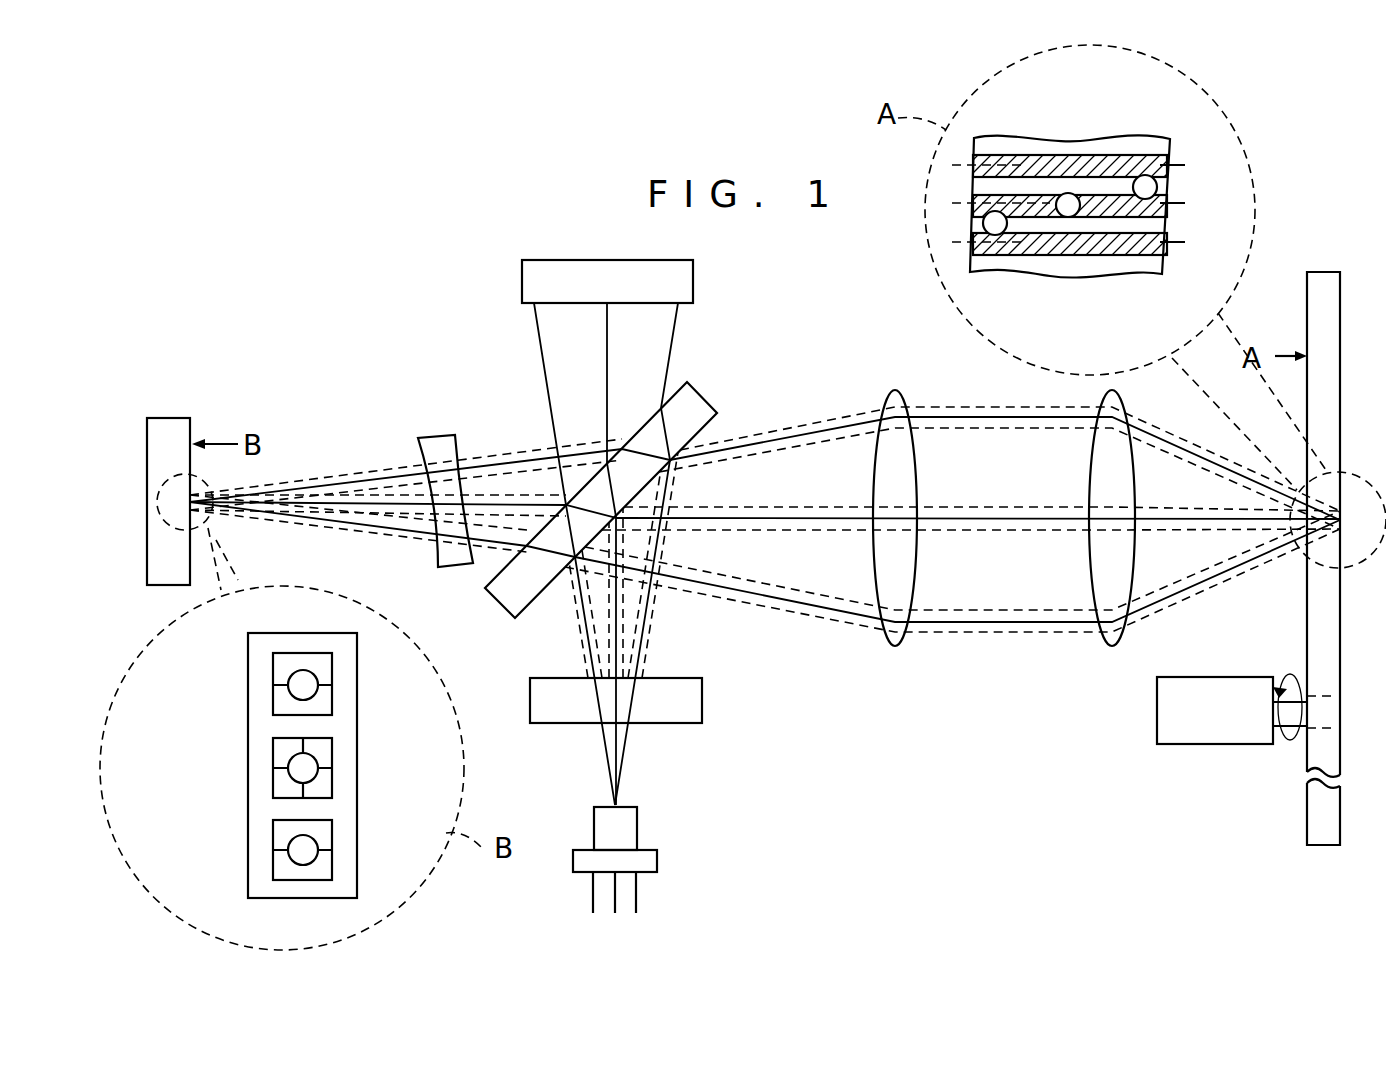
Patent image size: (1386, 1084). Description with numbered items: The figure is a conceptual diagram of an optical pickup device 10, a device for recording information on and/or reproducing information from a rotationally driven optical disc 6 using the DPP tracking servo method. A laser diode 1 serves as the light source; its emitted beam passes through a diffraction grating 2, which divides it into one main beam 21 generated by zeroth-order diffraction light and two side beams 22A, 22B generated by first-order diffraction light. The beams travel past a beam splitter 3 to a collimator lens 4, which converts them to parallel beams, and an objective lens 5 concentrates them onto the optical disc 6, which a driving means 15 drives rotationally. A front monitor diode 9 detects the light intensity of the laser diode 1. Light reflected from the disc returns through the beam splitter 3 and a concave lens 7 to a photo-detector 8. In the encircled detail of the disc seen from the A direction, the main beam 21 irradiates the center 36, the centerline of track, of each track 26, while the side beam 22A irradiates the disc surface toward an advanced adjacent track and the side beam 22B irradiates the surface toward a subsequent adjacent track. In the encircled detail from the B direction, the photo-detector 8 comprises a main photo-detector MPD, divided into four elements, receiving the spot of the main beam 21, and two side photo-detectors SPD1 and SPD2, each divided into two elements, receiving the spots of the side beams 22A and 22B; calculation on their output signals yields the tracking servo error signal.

The laser diode 1 is at (657, 860).
The diffraction grating 2 is at (702, 703).
The beam splitter 3 is at (492, 602).
The collimator lens 4 is at (885, 648).
The objective lens 5 is at (1103, 648).
The optical disc 6 is at (1327, 272).
The concave lens 7 is at (435, 432).
The photo-detector 8 is at (171, 418).
The front monitor diode 9 is at (522, 278).
The optical pickup device 10 is at (350, 293).
The driving means 15 is at (1213, 744).
The main beam 21 is at (1068, 194).
The side beam 22A is at (1147, 175).
The side beam 22B is at (1002, 212).
The track 26 is at (1022, 207).
The centerline of track 36 is at (1178, 168).
The side photo-detector SPD1 is at (273, 863).
The side photo-detector SPD2 is at (273, 700).
The main photo-detector MPD is at (273, 787).